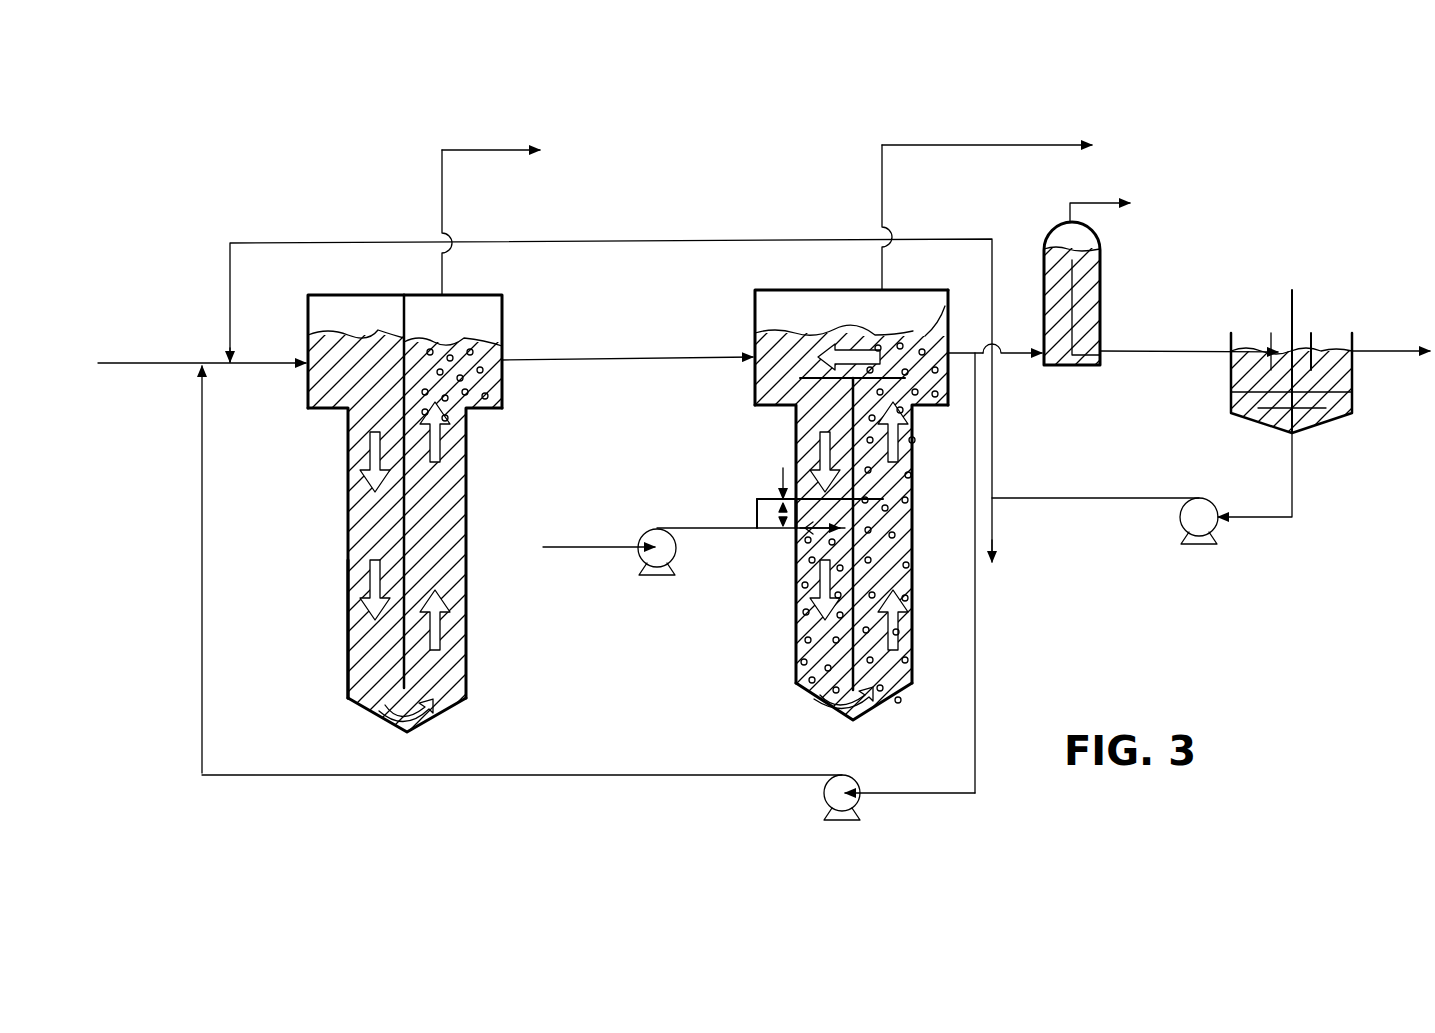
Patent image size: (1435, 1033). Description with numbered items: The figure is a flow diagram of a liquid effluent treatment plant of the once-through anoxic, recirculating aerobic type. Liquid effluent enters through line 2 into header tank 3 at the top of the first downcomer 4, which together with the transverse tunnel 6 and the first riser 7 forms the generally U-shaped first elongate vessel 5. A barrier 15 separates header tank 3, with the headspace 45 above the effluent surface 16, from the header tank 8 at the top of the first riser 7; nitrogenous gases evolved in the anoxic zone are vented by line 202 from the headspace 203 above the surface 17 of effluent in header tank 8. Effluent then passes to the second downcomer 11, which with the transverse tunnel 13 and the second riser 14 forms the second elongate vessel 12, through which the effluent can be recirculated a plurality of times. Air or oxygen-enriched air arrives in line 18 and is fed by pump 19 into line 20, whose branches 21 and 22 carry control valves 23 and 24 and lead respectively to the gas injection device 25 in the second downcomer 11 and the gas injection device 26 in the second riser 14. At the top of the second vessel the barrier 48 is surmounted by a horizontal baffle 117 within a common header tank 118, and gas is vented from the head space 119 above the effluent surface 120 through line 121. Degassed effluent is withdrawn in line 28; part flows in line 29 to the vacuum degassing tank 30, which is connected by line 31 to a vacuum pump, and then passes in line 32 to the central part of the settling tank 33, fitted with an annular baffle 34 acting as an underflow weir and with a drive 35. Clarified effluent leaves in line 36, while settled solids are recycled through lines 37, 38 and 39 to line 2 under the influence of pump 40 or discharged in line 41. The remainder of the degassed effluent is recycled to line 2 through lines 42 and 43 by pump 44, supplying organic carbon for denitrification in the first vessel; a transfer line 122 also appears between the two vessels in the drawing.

The line 2 is at (168, 363).
The header tank 3 is at (306, 396).
The first downcomer 4 is at (358, 520).
The first elongate vessel 5 is at (348, 638).
The transverse tunnel 6 is at (410, 726).
The first riser 7 is at (452, 523).
The header tank 8 is at (502, 388).
The second downcomer 11 is at (796, 650).
The second elongate vessel 12 is at (904, 606).
The transverse tunnel 13 is at (852, 722).
The second riser 14 is at (908, 540).
The barrier 15 is at (401, 428).
The surface 16 is at (324, 310).
The surface 17 is at (492, 336).
The line 18 is at (578, 547).
The pump 19 is at (650, 536).
The line 20 is at (688, 526).
The branch 21 is at (766, 544).
The branch 22 is at (756, 504).
The control valve 23 is at (788, 538).
The control valve 24 is at (776, 470).
The gas injection device 25 is at (806, 566).
The gas injection device 26 is at (906, 470).
The line 28 is at (962, 353).
The line 29 is at (1014, 352).
The vacuum degassing tank 30 is at (1100, 285).
The line 31 is at (1092, 202).
The line 32 is at (1144, 351).
The settling tank 33 is at (1230, 399).
The annular baffle 34 is at (1312, 330).
The drive 35 is at (1292, 290).
The line 36 is at (1382, 351).
The line 37 is at (1292, 489).
The line 38 is at (1090, 494).
The line 39 is at (776, 240).
The pump 40 is at (1212, 508).
The line 41 is at (992, 532).
The line 42 is at (978, 694).
The line 43 is at (640, 776).
The pump 44 is at (826, 794).
The headspace 45 is at (380, 312).
The barrier 48 is at (896, 658).
The horizontal baffle 117 is at (908, 400).
The common header tank 118 is at (755, 324).
The head space 119 is at (796, 304).
The surface 120 is at (924, 314).
The line 121 is at (974, 145).
The transfer line between reactors 122 is at (620, 357).
The line 202 is at (488, 150).
The headspace 203 is at (450, 316).